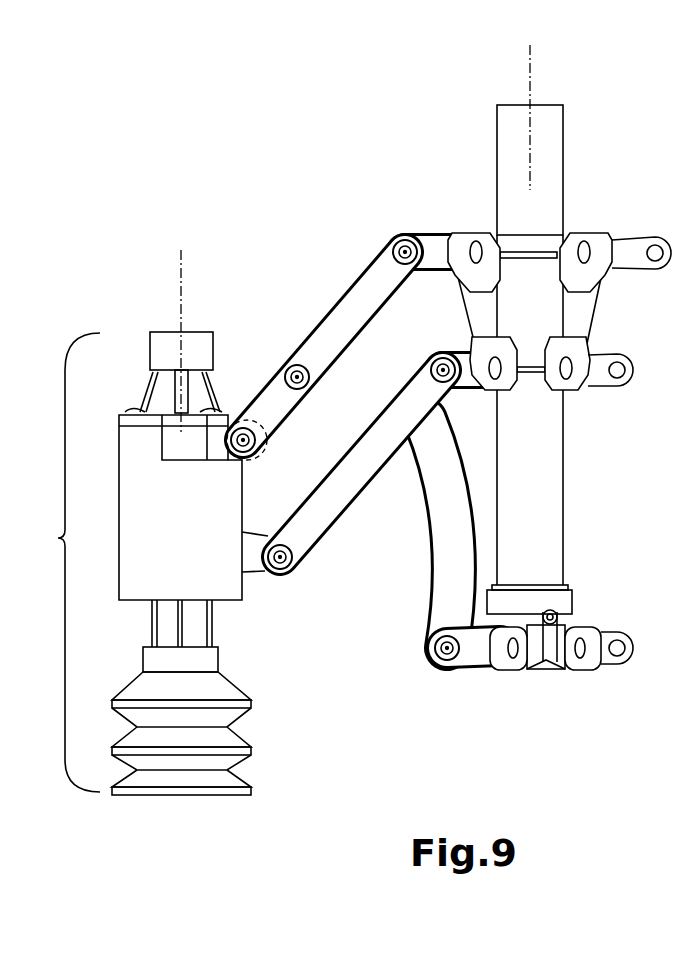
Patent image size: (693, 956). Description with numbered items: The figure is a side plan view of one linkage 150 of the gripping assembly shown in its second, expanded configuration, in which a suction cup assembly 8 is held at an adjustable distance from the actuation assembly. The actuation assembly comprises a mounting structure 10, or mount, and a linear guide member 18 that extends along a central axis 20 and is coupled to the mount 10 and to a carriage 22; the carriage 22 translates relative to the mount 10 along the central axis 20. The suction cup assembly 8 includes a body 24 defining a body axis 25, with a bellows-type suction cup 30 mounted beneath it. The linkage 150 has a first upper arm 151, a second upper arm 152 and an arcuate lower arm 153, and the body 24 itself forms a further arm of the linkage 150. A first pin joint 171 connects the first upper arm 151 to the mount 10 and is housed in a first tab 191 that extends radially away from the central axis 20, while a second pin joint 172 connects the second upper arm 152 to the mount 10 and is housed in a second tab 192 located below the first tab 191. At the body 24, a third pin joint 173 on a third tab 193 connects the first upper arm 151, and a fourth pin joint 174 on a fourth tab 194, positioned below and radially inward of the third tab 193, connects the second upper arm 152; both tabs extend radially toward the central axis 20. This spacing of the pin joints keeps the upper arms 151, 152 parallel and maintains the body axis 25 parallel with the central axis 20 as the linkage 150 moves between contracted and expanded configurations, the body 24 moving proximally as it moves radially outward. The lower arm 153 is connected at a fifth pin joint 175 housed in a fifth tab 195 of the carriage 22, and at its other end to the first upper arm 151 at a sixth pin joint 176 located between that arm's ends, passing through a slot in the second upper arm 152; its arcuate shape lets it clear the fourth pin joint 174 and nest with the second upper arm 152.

The suction cup assembly 8 is at (58, 538).
The mounting structure 10 is at (555, 318).
The linear guide member 18 is at (540, 498).
The central axis 20 is at (528, 90).
The carriage 22 is at (563, 602).
The body 24 is at (196, 539).
The body axis 25 is at (181, 285).
The suction cup 30 is at (235, 796).
The linkage 150 is at (265, 232).
The first upper arm 151 is at (365, 305).
The second upper arm 152 is at (340, 495).
The lower arm 153 is at (443, 553).
The first pin joint 171 is at (403, 238).
The second pin joint 172 is at (435, 356).
The third pin joint 173 is at (246, 456).
The fourth pin joint 174 is at (297, 570).
The fifth pin joint 175 is at (440, 660).
The sixth pin joint 176 is at (297, 364).
The first tab 191 is at (463, 240).
The second tab 192 is at (478, 388).
The third tab 193 is at (259, 398).
The fourth tab 194 is at (250, 560).
The fifth tab 195 is at (500, 658).